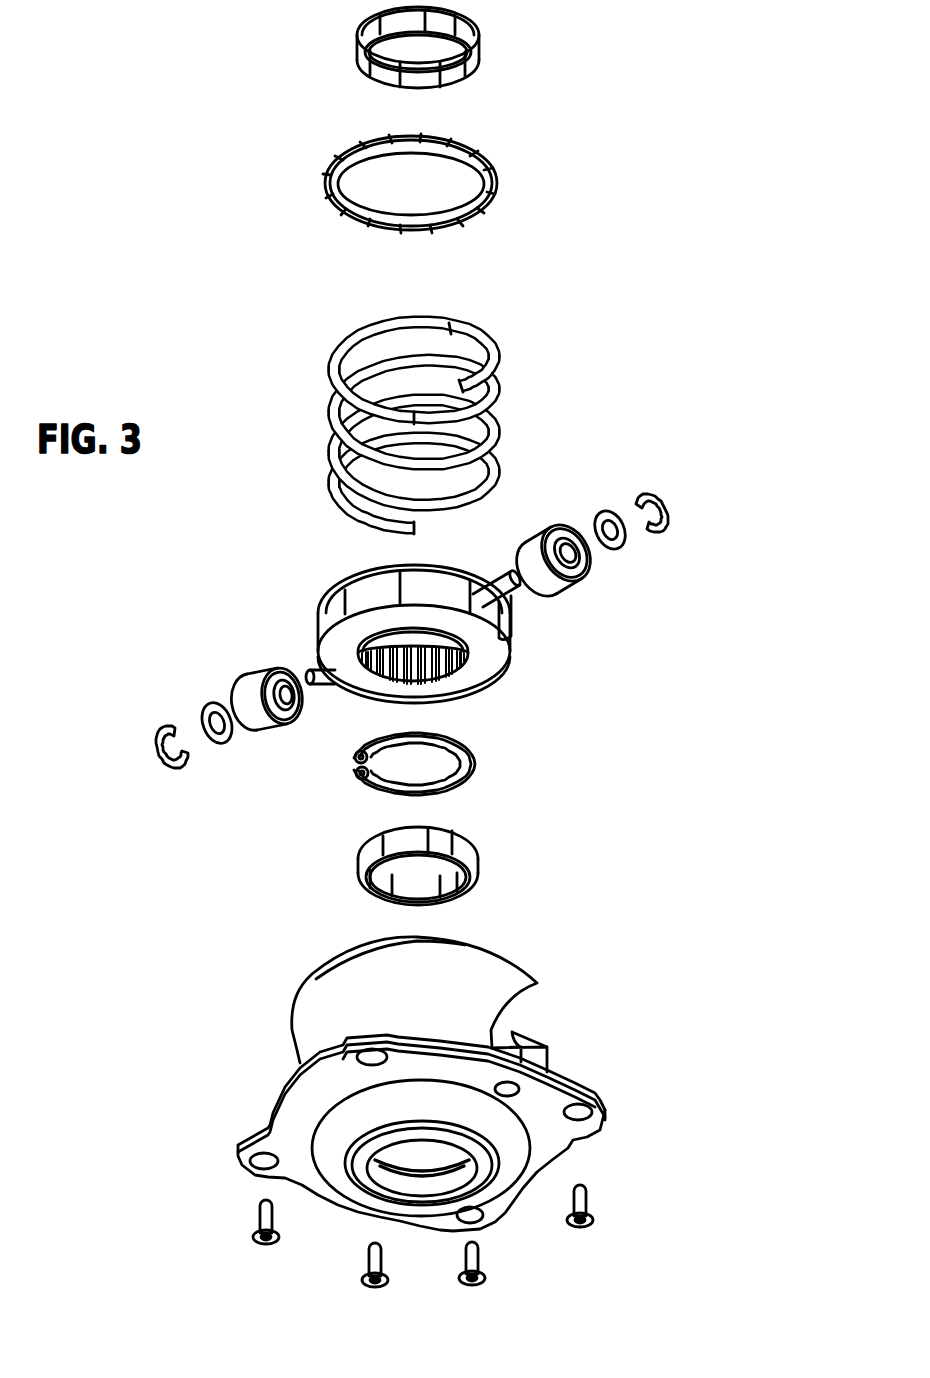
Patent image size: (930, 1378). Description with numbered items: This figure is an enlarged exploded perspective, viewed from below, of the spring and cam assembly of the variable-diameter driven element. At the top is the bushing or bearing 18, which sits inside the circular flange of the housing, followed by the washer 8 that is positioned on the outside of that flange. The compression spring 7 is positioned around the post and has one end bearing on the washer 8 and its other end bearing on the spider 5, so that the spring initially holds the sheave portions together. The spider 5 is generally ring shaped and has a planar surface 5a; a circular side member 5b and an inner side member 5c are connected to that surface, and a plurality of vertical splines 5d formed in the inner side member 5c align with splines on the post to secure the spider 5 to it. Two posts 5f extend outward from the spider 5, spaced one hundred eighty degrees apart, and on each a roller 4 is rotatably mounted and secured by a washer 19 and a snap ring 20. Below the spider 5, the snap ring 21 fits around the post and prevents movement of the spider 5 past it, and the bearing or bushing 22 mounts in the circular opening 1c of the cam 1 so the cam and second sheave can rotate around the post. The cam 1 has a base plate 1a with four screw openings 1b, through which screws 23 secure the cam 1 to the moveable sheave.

The cam 1 is at (428, 1084).
The base plate 1a is at (284, 1122).
The screw openings 1b is at (583, 1115).
The circular opening 1c is at (428, 1150).
The roller 4 is at (540, 532).
The spider 5 is at (407, 634).
The planar surface 5a is at (470, 677).
The circular side member 5b is at (337, 603).
The inner side member 5c is at (398, 683).
The vertical splines 5d is at (423, 677).
The posts 5f is at (492, 583).
The compression spring 7 is at (497, 390).
The washer 8 is at (497, 188).
The bushing or bearing 18 is at (480, 43).
The washer 19 is at (603, 518).
The snap ring 20 is at (664, 522).
The snap ring 21 is at (373, 787).
The bearing or bushing 22 is at (477, 863).
The screws 23 is at (258, 1218).